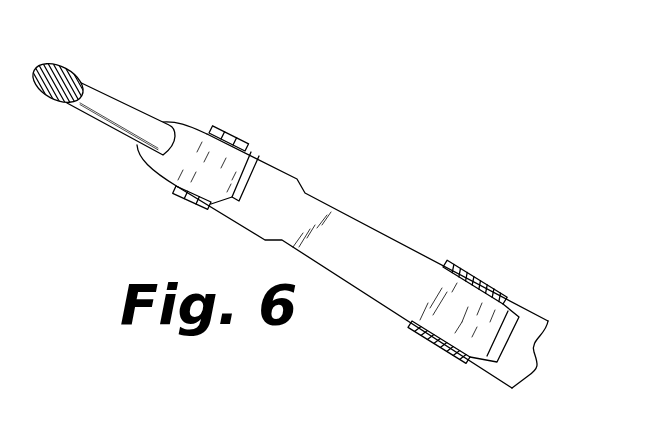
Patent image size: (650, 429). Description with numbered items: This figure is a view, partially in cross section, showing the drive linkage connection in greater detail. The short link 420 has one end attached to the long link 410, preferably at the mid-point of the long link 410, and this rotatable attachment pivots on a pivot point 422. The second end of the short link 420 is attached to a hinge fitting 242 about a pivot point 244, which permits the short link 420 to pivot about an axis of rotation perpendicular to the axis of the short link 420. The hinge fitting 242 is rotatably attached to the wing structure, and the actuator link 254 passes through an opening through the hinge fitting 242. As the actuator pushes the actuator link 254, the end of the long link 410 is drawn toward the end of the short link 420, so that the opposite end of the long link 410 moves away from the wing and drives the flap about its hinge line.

The actuator link 254 is at (118, 78).
The hinge fitting 242 is at (201, 116).
The pivot point 244 is at (239, 127).
The short link 420 is at (337, 202).
The pivot point 422 is at (510, 278).
The long link 410 is at (556, 310).